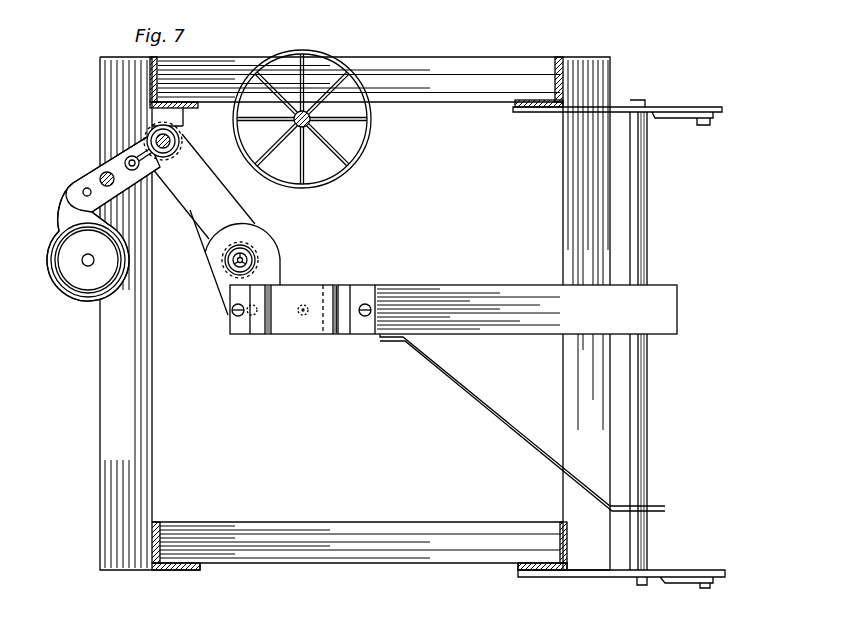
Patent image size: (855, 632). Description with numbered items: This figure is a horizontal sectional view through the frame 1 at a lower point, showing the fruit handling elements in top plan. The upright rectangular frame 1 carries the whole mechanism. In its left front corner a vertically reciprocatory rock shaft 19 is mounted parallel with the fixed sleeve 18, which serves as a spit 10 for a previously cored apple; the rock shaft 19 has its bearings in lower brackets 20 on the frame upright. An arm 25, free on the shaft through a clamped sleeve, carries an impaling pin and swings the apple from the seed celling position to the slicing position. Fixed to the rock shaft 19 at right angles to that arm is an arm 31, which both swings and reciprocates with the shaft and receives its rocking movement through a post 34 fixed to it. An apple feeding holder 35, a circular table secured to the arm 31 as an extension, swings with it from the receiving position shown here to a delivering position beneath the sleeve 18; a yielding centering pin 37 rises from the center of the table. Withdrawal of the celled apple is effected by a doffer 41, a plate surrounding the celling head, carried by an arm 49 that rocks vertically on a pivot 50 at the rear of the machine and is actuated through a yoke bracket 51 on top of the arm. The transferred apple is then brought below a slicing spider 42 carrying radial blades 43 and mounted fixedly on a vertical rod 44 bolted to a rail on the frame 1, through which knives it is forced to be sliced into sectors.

The frame 1 is at (170, 530).
The spit 10 is at (254, 262).
The sleeve 18 is at (250, 257).
The rock shaft 19 is at (185, 140).
The lower brackets 20 is at (181, 117).
The arm 25 is at (223, 206).
The arm 31 is at (127, 181).
The post 34 is at (101, 177).
The apple feeding holder 35 is at (76, 241).
The centering pin 37 is at (85, 264).
The doffer 41 is at (268, 240).
The slicing spider 42 is at (373, 132).
The radial blades 43 is at (305, 167).
The vertical rod 44 is at (296, 122).
The arm 49 is at (512, 333).
The pivot 50 is at (650, 425).
The yoke bracket 51 is at (310, 332).